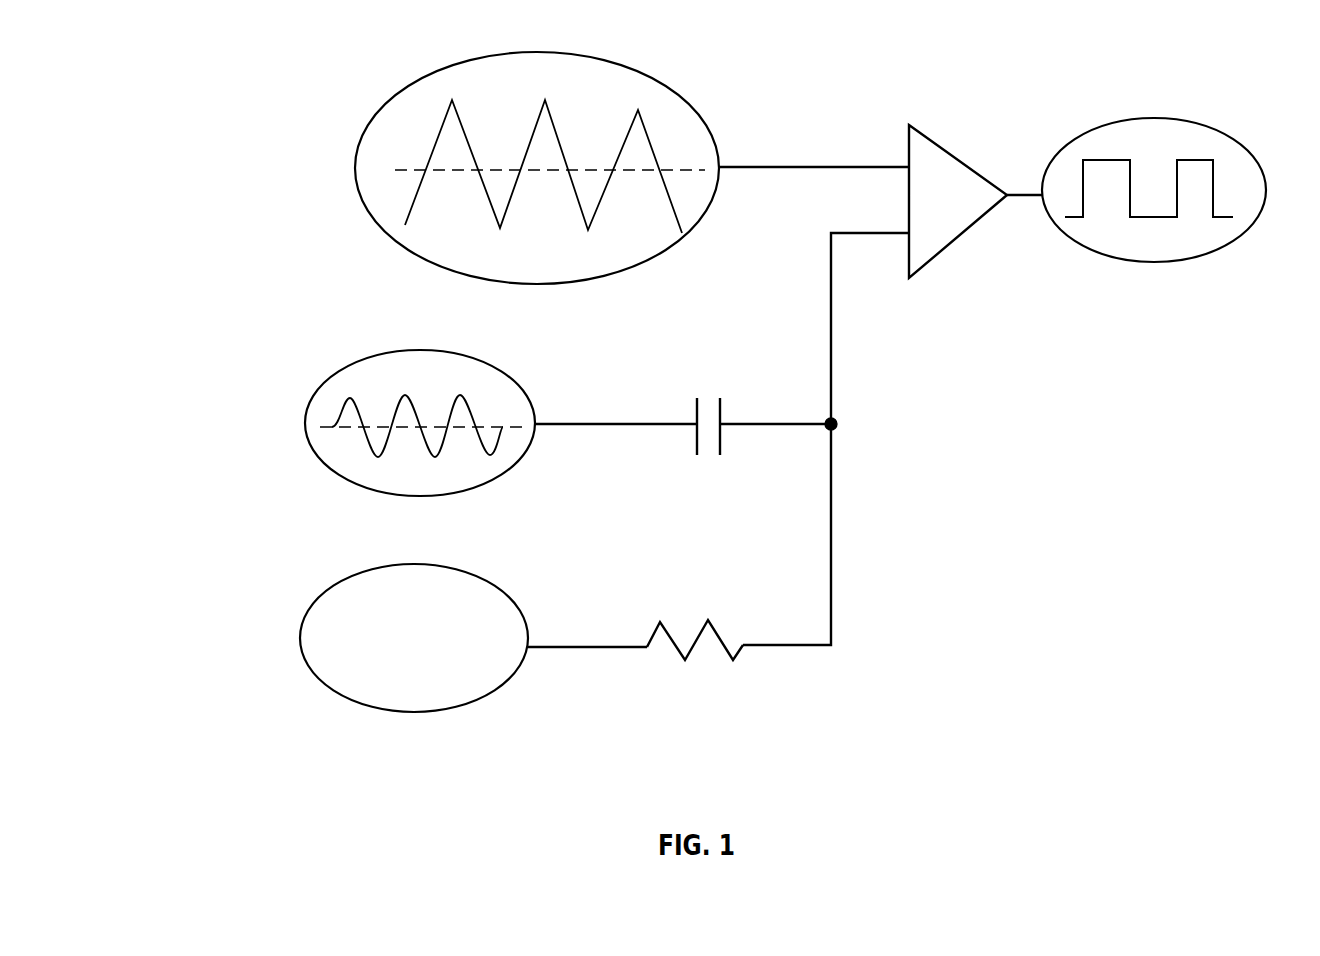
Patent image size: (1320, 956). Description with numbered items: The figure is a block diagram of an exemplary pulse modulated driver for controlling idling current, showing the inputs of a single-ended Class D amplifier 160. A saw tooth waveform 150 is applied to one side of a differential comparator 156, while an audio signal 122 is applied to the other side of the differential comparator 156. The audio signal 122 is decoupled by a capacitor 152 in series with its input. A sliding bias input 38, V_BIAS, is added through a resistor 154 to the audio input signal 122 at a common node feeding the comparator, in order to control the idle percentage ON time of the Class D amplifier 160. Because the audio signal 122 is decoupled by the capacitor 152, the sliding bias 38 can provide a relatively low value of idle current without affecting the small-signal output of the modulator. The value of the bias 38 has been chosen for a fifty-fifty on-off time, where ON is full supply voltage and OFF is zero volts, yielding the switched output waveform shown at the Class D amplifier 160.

The saw tooth waveform 150 is at (415, 72).
The differential comparator 156 is at (912, 124).
The Class D amplifier 160 is at (1110, 110).
The audio signal 122 is at (350, 362).
The capacitor 152 is at (703, 385).
The sliding bias input 38 is at (335, 578).
The bias resistor 154 is at (690, 612).